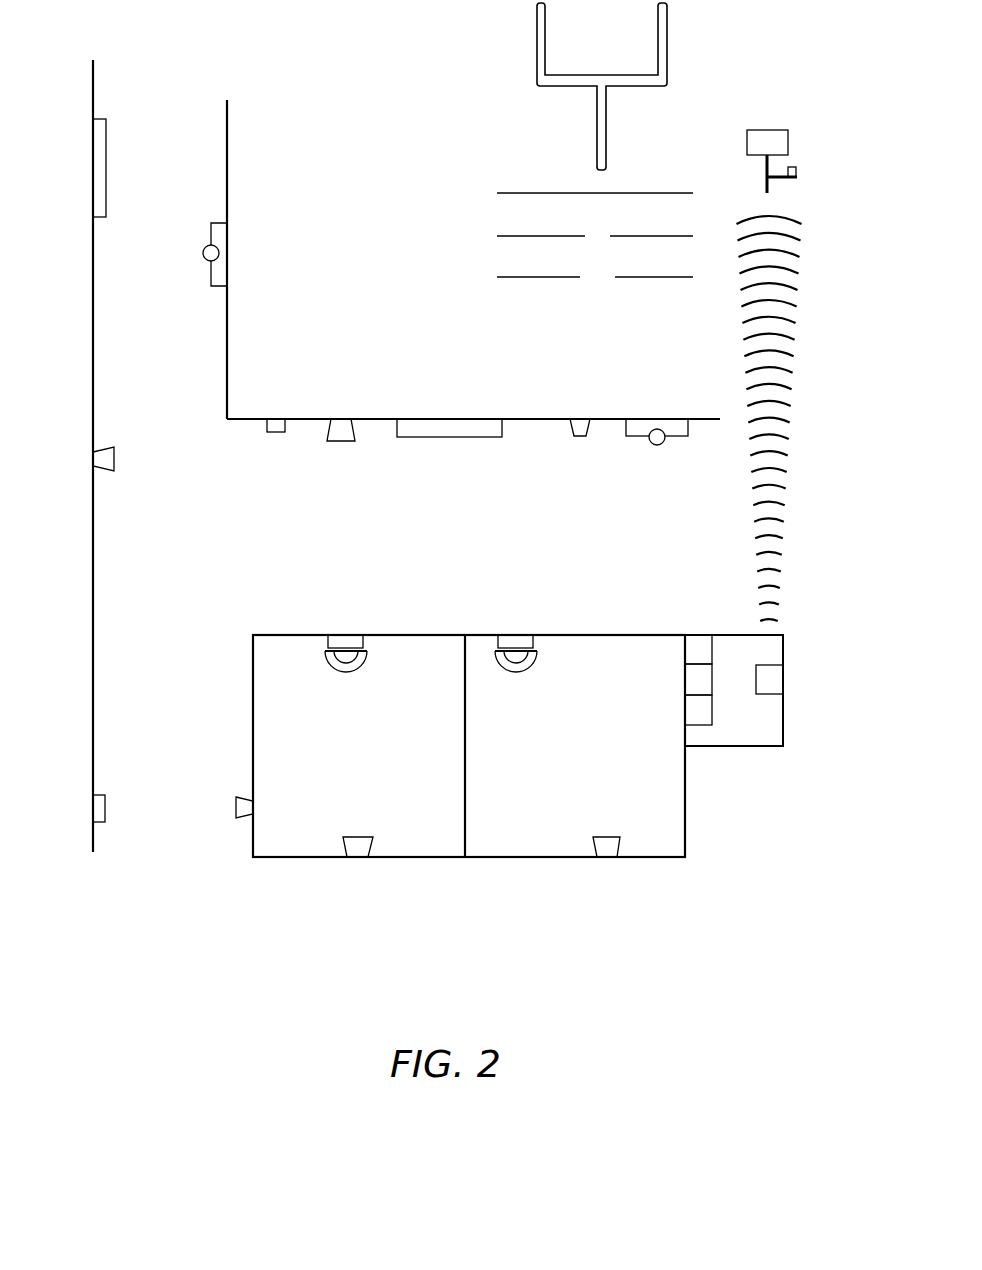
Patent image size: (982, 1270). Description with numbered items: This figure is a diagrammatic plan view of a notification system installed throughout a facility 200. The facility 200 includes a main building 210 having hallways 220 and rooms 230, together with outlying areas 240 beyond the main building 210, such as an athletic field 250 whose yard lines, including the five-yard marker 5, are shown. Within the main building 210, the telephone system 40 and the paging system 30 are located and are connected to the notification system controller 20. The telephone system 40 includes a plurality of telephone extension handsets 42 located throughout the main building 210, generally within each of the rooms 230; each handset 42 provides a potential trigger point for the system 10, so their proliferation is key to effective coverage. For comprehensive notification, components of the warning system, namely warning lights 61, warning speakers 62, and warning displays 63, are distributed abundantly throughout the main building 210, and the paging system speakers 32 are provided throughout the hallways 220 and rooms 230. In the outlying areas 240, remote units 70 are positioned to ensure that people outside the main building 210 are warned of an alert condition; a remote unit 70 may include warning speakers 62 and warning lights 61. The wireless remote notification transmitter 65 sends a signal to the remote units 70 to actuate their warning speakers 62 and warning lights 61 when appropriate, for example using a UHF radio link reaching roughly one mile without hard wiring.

The five yard line 5 is at (595, 237).
The system 10 is at (772, 825).
The notification system controller 20 is at (713, 680).
The paging system 30 is at (697, 724).
The paging system speakers 32 is at (115, 454).
The telephone system 40 is at (713, 650).
The telephone extension handsets 42 is at (364, 646).
The warning lights 61 is at (797, 171).
The warning speakers 62 is at (788, 136).
The warning displays 63 is at (106, 152).
The wireless remote notification transmitter 65 is at (775, 694).
The remote units 70 is at (766, 172).
The facility 200 is at (264, 914).
The main building 210 is at (93, 672).
The hallways 220 is at (204, 749).
The rooms 230 is at (435, 843).
The outlying areas 240 is at (470, 97).
The athletic field 250 is at (455, 249).